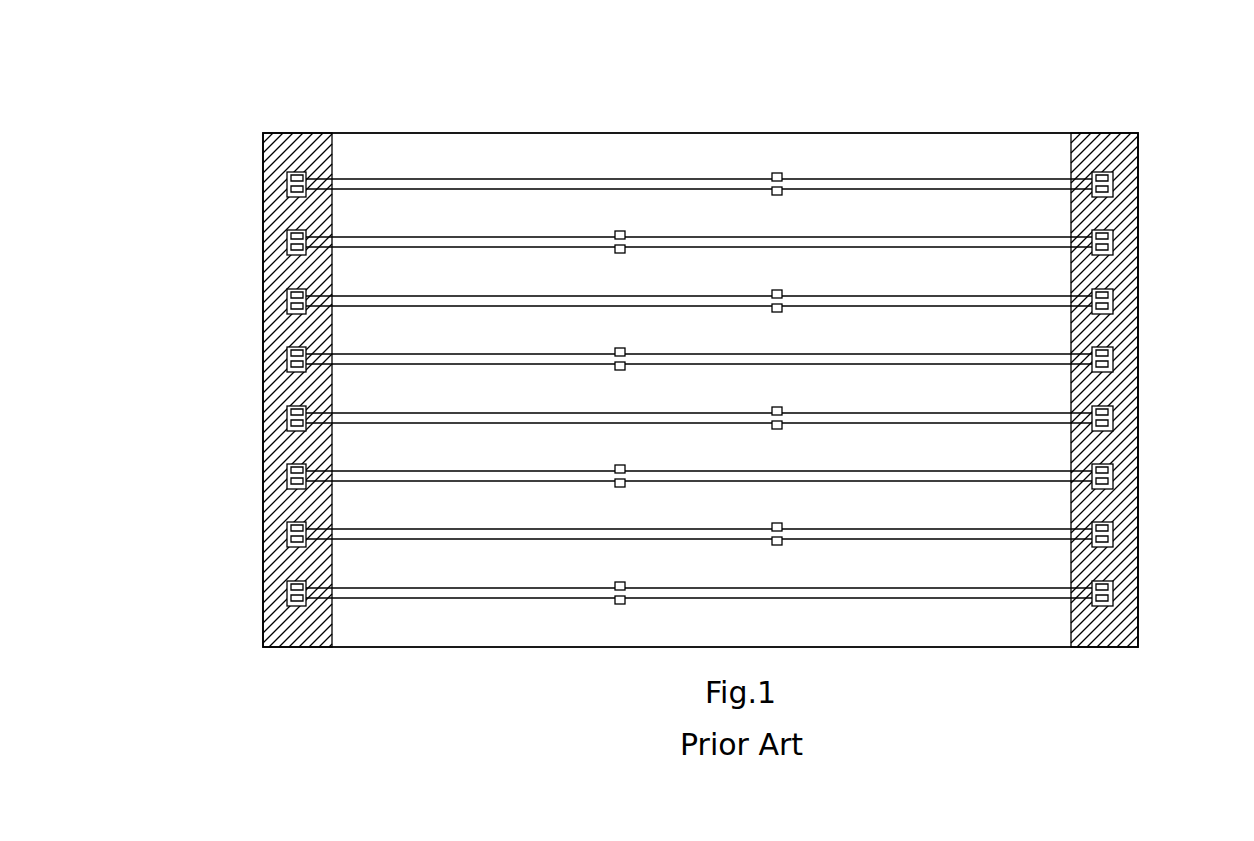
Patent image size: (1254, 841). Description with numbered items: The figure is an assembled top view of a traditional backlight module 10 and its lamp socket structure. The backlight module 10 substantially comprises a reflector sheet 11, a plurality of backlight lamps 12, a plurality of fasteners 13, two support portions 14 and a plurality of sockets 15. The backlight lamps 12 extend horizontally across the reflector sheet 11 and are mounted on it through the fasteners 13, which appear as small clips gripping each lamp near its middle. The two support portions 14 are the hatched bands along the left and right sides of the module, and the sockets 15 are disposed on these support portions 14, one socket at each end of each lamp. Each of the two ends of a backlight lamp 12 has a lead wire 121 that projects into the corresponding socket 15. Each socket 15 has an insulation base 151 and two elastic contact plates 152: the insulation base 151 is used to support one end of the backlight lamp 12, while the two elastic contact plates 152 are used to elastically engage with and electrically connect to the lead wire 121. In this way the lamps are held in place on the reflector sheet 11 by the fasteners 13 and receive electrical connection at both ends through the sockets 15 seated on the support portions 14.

The backlight module 10 is at (250, 67).
The reflector sheet 11 is at (866, 163).
The backlight lamps 12 is at (381, 180).
The lead wire 121 is at (303, 174).
The fasteners 13 is at (778, 172).
The support portions 14 is at (1138, 180).
The sockets 15 is at (156, 133).
The insulation base 151 is at (300, 195).
The elastic contact plates 152 is at (300, 178).